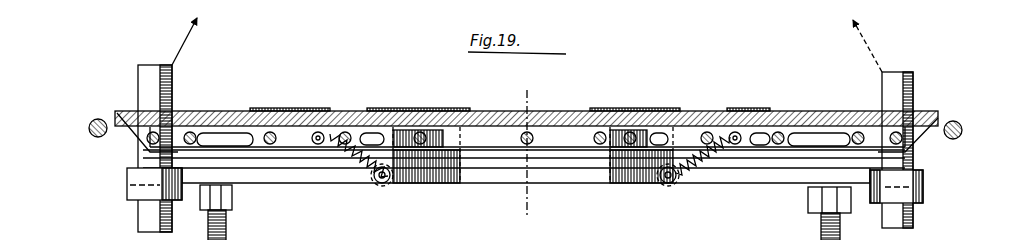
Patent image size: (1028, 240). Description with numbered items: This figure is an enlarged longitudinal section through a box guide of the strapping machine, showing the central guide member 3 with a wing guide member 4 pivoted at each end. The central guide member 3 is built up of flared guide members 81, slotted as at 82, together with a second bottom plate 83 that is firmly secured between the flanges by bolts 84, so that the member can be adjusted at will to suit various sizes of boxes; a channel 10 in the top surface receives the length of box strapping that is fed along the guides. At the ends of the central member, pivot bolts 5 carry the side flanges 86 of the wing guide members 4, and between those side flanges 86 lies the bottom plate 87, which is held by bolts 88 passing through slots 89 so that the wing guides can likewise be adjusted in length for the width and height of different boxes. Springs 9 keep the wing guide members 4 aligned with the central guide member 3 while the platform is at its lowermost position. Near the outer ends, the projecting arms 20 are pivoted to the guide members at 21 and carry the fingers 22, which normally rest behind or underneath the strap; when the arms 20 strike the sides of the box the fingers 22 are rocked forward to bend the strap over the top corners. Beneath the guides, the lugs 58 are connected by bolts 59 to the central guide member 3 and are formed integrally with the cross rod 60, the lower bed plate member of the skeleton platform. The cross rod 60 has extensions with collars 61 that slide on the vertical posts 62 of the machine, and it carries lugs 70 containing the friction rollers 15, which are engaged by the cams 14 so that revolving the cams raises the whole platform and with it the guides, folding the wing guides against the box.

The central guide member 3 is at (610, 88).
The wing guide member 4 is at (335, 88).
The pivot bolt 5 is at (360, 112).
The spring 9 is at (372, 182).
The channel 10 is at (128, 112).
The cam 14 is at (232, 239).
The friction roller 15 is at (248, 188).
The projecting arm 20 is at (115, 112).
The arm pivot 21 is at (140, 152).
The finger 22 is at (527, 94).
The lug 58 is at (452, 160).
The bolt 59 is at (430, 128).
The cross rod 60 is at (322, 178).
The collar 61 is at (128, 185).
The vertical post 62 is at (150, 211).
The lug 70 is at (212, 226).
The flared guide member 81 is at (572, 107).
The slot 82 is at (566, 141).
The bottom plate 83 is at (655, 124).
The bolt 84 is at (495, 112).
The side flange 86 is at (322, 111).
The bottom plate 87 is at (204, 126).
The bolt 88 is at (213, 113).
The slot 89 is at (243, 140).